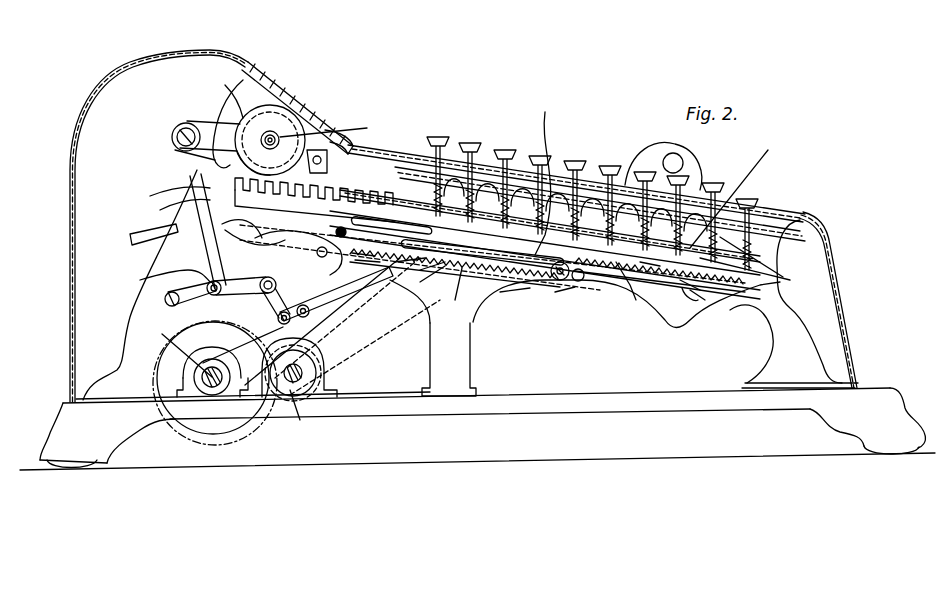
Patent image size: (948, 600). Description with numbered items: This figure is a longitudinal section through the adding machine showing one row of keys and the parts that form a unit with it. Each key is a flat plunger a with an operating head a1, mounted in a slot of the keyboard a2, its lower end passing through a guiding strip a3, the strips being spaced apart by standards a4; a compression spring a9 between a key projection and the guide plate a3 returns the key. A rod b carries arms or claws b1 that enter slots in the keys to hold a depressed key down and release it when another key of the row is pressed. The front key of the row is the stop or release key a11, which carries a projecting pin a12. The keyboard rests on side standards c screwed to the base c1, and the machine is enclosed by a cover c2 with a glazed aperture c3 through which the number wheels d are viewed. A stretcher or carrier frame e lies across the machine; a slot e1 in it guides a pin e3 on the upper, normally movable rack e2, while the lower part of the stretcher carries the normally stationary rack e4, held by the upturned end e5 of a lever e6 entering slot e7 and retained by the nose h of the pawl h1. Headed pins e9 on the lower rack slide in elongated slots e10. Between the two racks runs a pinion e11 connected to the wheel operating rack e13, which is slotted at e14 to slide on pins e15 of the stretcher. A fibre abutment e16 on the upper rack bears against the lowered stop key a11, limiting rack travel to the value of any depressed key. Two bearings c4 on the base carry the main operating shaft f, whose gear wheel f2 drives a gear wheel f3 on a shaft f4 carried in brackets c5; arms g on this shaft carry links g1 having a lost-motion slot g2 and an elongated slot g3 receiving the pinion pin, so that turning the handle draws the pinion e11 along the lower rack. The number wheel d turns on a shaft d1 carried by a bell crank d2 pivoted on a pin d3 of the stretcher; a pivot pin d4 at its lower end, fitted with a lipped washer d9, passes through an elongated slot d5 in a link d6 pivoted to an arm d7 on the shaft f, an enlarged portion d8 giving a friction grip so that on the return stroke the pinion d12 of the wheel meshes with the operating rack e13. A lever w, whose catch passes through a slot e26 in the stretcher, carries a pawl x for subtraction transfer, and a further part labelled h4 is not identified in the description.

The flat plunger a is at (510, 152).
The operating head a1 is at (446, 128).
The keyboard a2 is at (720, 174).
The guiding strip a3 is at (738, 190).
The standard a4 is at (474, 143).
The compression spring a9 is at (790, 262).
The release key a11 is at (758, 202).
The projecting pin a12 is at (560, 174).
The rod b is at (580, 250).
The arm or claw b1 is at (530, 235).
The side standard c is at (470, 285).
The base c1 is at (678, 382).
The cover c2 is at (120, 84).
The glazed aperture c3 is at (335, 124).
The bearing c4 is at (318, 400).
The bracket c5 is at (192, 402).
The number wheel d is at (345, 126).
The shaft d1 is at (332, 135).
The bell crank d2 is at (160, 214).
The pin d3 is at (174, 132).
The pivot pin d4 is at (205, 302).
The elongated slot d5 is at (165, 299).
The link d6 is at (299, 300).
The arm d7 is at (275, 307).
The enlarged portion d8 is at (164, 275).
The lipped washer d9 is at (245, 299).
The pinion d12 is at (300, 108).
The stretcher e is at (680, 316).
The slot e1 is at (550, 215).
The upper rack e2 is at (632, 298).
The pin or projection e3 is at (658, 270).
The lower rack e4 is at (458, 305).
The upturned end e5 is at (430, 272).
The lever e6 is at (350, 288).
The slot e7 is at (438, 292).
The headed pin e9 is at (548, 298).
The elongated slot e10 is at (516, 298).
The pinion e11 is at (570, 283).
The wheel operating rack e13 is at (175, 150).
The slot e14 is at (157, 207).
The pin e15 is at (253, 227).
The fibre abutment e16 is at (770, 257).
The slot e26 is at (366, 273).
The main operating shaft f is at (316, 375).
The gear wheel f2 is at (297, 405).
The gear wheel f3 is at (172, 366).
The shaft f4 is at (181, 347).
The arm g is at (280, 400).
The link g1 is at (326, 322).
The slot g2 is at (220, 378).
The elongated slot g3 is at (735, 302).
The nose h is at (298, 253).
The pawl h1 is at (154, 246).
The spring h4 is at (150, 196).
The lever w is at (320, 235).
The pawl x is at (216, 231).